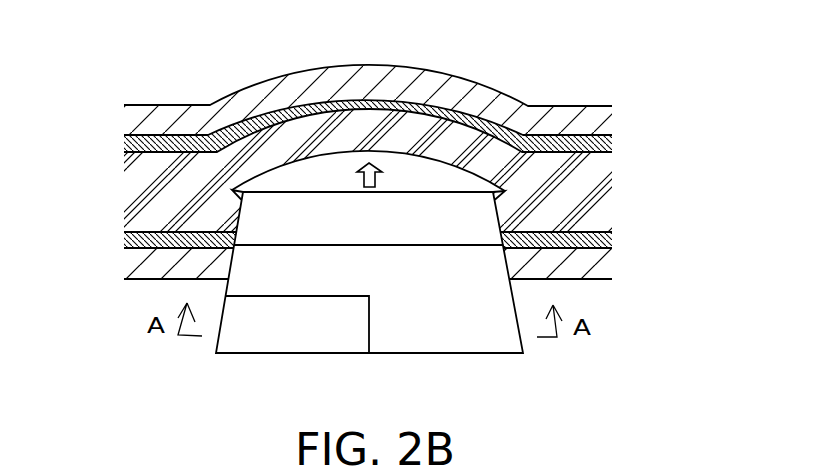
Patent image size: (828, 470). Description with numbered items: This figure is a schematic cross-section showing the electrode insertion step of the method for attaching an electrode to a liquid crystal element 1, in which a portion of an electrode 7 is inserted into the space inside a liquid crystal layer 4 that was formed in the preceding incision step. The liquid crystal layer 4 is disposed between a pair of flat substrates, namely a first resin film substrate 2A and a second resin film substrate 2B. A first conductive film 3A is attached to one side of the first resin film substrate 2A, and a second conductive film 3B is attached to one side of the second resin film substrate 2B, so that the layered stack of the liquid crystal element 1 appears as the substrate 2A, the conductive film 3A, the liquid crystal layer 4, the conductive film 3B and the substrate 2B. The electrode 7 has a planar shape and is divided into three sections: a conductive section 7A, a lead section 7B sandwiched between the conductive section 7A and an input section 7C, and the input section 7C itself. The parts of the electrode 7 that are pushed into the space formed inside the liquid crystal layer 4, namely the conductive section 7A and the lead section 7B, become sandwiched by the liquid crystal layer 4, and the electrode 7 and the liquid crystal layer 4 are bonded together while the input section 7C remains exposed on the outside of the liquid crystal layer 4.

The liquid crystal element 1 is at (373, 149).
The first resin film substrate 2A is at (612, 117).
The second resin film substrate 2B is at (612, 260).
The first conductive film 3A is at (613, 145).
The second conductive film 3B is at (613, 234).
The liquid crystal layer 4 is at (138, 183).
The electrode 7 is at (394, 214).
The conductive section 7A is at (437, 205).
The lead section 7B is at (278, 267).
The input section 7C is at (258, 328).